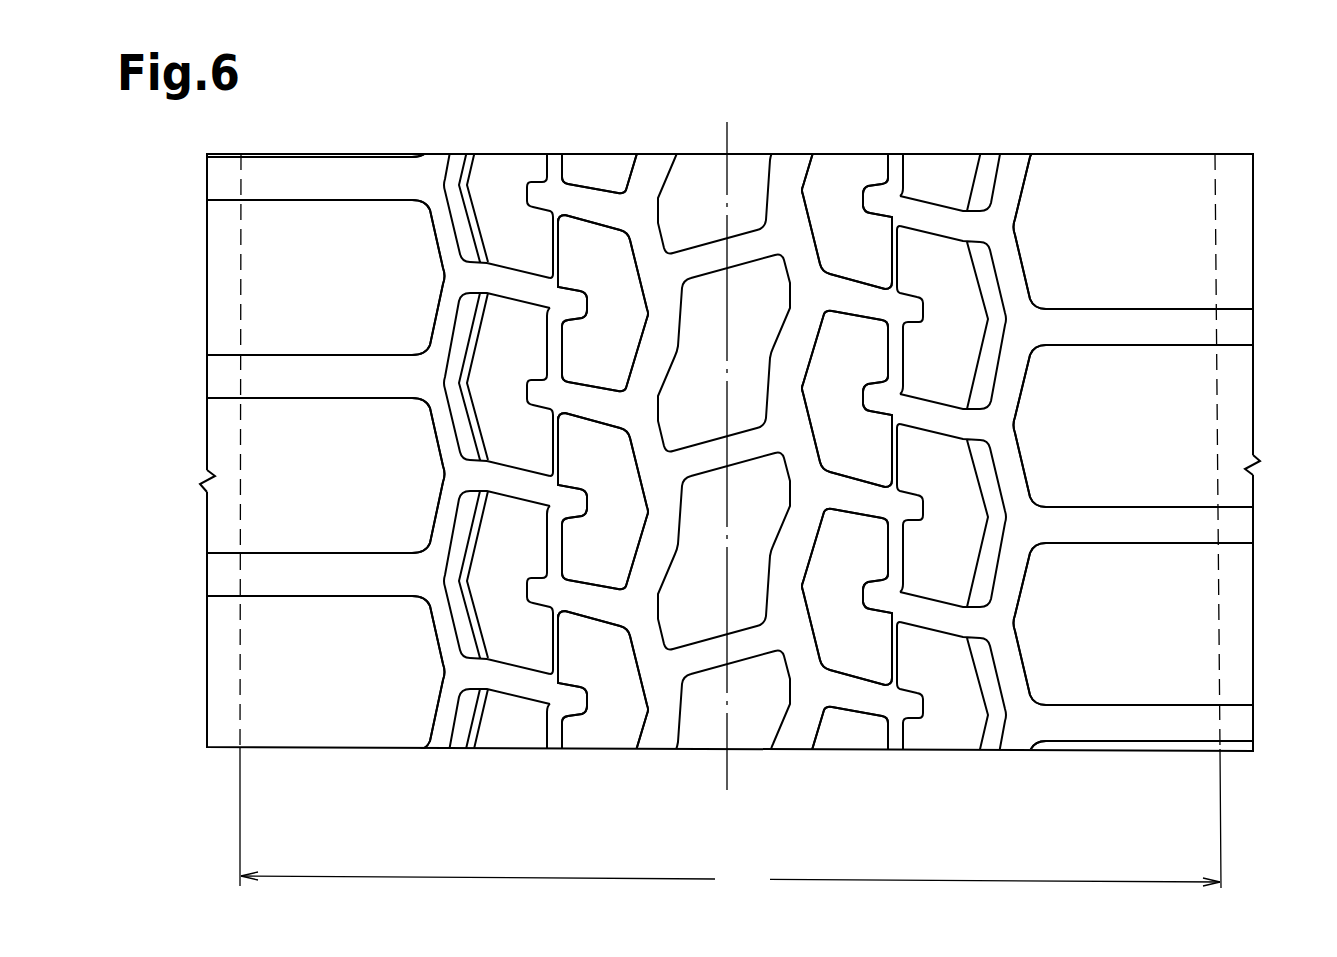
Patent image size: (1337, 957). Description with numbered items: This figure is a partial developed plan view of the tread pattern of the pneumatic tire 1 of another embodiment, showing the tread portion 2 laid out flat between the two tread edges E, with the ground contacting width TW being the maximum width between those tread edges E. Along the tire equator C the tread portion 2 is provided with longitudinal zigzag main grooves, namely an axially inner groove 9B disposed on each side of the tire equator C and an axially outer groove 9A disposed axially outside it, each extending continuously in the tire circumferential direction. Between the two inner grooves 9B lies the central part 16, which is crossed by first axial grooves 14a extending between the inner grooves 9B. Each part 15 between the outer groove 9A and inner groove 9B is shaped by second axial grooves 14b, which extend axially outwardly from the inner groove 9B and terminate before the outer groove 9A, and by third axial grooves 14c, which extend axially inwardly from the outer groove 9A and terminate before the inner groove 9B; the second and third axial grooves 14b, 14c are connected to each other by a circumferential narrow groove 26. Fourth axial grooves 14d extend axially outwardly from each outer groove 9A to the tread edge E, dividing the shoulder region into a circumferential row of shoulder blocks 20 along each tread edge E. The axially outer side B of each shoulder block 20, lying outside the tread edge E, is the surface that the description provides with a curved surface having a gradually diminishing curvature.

The pneumatic tire 1 is at (1189, 124).
The tread portion 2 is at (1113, 143).
The axially outer longitudinal main groove 9A is at (438, 203).
The axially inner longitudinal main groove 9B is at (648, 165).
The first axial grooves 14a is at (717, 658).
The second axial grooves 14b is at (595, 607).
The third axial grooves 14c is at (524, 690).
The fourth axial grooves 14d is at (358, 583).
The part between the axially outer and inner longitudinal main grooves 15 is at (545, 137).
The part between the axially inner longitudinal main grooves 16 is at (785, 690).
The shoulder blocks 20 is at (300, 433).
The circumferential narrow groove 26 is at (890, 257).
The buttress portion B is at (217, 282).
The tire equator C is at (722, 442).
The tread edges E is at (242, 230).
The ground contacting width TW is at (730, 821).